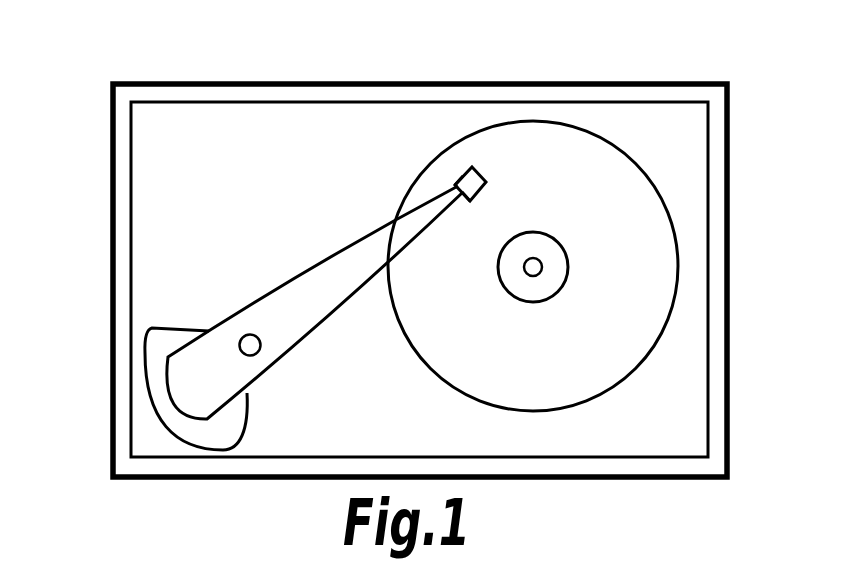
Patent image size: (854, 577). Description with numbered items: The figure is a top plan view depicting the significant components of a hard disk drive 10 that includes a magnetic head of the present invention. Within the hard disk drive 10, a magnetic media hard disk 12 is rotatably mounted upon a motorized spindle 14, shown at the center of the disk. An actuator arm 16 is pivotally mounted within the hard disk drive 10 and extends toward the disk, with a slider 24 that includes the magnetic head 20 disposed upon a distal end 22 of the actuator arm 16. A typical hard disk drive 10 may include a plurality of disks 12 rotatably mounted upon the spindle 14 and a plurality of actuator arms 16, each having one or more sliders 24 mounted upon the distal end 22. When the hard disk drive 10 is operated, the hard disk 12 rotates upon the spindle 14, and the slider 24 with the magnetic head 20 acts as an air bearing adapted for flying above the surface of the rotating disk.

The hard disk drive 10 is at (112, 266).
The magnetic media hard disk 12 is at (428, 357).
The motorized spindle 14 is at (566, 273).
The actuator arm 16 is at (318, 262).
The magnetic head 20 is at (486, 183).
The distal end 22 is at (464, 203).
The slider 24 is at (454, 183).